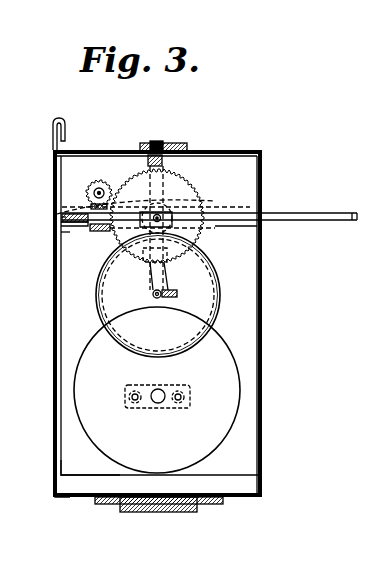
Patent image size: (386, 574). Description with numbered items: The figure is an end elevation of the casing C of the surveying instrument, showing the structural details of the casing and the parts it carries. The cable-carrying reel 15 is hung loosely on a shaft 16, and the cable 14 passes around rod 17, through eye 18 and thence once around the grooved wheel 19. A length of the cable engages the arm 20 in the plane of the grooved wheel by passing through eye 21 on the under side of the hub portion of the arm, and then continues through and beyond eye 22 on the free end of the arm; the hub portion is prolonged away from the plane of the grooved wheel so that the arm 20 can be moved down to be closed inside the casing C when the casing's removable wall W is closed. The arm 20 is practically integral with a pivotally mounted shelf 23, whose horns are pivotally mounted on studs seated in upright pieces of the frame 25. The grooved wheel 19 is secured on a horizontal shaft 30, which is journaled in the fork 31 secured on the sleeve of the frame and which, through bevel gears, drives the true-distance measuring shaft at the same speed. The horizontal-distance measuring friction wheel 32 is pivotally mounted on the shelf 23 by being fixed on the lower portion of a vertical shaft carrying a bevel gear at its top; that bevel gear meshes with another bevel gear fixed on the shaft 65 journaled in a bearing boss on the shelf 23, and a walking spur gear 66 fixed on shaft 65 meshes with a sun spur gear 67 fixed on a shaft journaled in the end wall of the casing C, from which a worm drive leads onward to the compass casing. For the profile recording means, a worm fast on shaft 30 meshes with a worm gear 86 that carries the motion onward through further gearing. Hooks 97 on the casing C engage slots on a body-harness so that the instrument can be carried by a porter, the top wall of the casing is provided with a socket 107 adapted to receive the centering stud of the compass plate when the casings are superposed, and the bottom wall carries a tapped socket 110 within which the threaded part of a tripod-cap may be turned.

The cable 14 is at (56, 322).
The cable-carrying reel 15 is at (226, 430).
The shaft 16 is at (158, 403).
The rod 17 is at (58, 458).
The eye 18 is at (62, 240).
The grooved wheel 19 is at (100, 316).
The arm 20 is at (288, 214).
The eye 21 is at (198, 240).
The eye 22 is at (355, 221).
The pivotally mounted shelf 23 is at (100, 232).
The frame 25 is at (176, 148).
The horizontal shaft 30 is at (153, 295).
The fork 31 is at (148, 268).
The horizontal-distance measuring friction wheel 32 is at (62, 224).
The shaft 65 is at (95, 184).
The walking spur gear 66 is at (104, 184).
The sun spur gear 67 is at (196, 186).
The worm gear 86 is at (220, 300).
The hooks 97 is at (63, 127).
The socket 107 is at (160, 142).
The tapped socket 110 is at (160, 512).
The casing C is at (55, 498).
The removable wall W is at (263, 368).